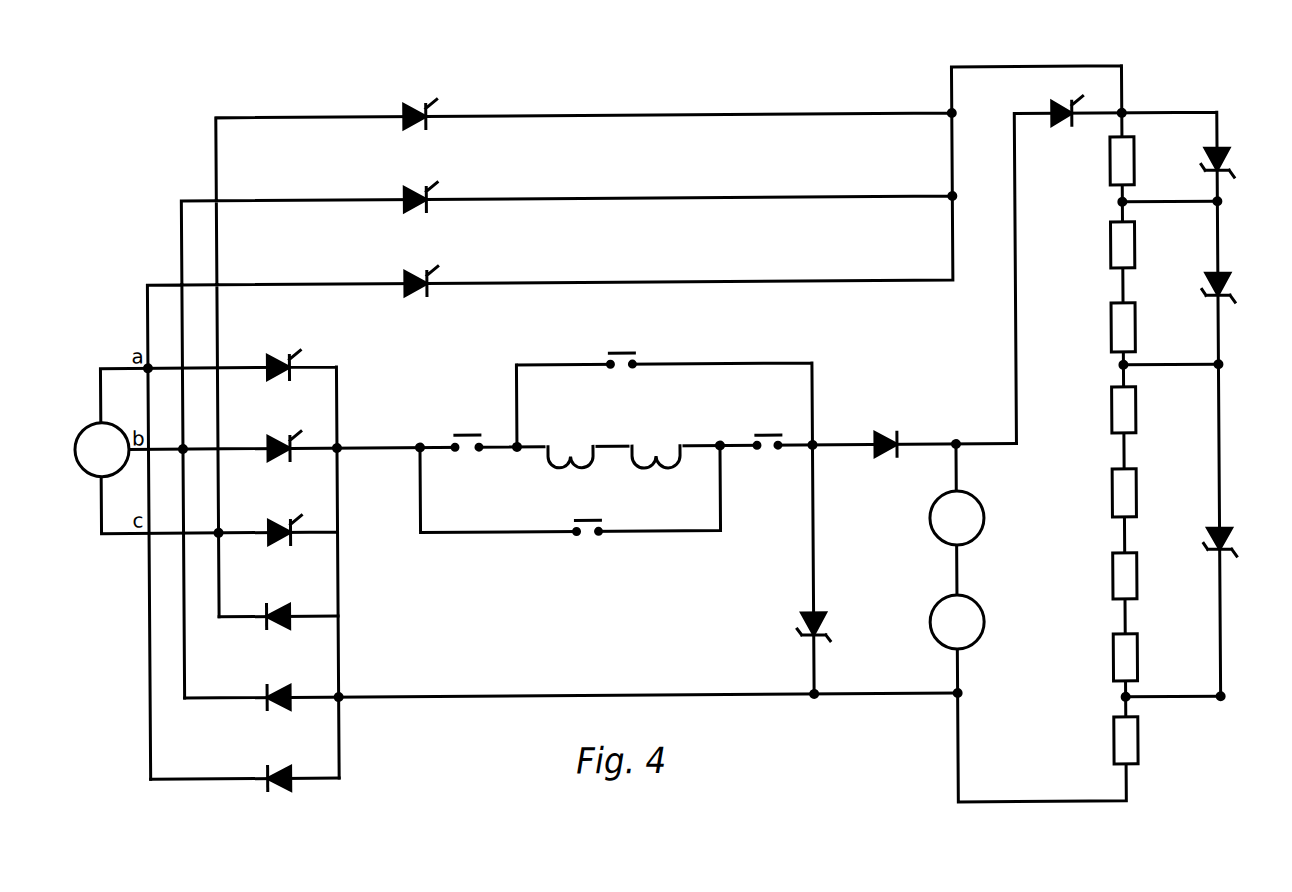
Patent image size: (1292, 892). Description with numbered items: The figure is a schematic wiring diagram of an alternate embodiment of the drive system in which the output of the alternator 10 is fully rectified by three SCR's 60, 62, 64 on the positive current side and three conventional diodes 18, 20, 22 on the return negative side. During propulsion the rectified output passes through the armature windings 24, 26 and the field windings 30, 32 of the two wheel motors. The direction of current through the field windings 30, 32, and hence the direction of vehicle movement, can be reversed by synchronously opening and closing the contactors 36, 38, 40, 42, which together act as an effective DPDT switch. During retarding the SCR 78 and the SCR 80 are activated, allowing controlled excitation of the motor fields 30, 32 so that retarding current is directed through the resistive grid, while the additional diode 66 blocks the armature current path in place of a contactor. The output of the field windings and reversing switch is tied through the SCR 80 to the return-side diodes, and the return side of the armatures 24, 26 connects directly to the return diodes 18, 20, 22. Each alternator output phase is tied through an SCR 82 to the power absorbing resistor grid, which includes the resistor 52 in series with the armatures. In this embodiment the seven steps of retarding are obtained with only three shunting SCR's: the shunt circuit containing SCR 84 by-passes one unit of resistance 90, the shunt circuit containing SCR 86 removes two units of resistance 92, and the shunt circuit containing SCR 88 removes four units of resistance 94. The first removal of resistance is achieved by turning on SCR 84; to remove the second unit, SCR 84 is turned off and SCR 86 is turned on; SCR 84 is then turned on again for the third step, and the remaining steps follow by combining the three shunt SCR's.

The alternator 10 is at (120, 421).
The diode 18 is at (274, 603).
The diode 20 is at (275, 685).
The diode 22 is at (276, 767).
The armature winding 24 is at (980, 511).
The armature winding 26 is at (980, 614).
The field winding 30 is at (646, 455).
The field winding 32 is at (566, 455).
The contactor 36 is at (766, 434).
The contactor 38 is at (466, 432).
The contactor 40 is at (588, 517).
The contactor 42 is at (626, 350).
The power absorbing resistor 52 is at (1138, 739).
The SCR 60 is at (274, 352).
The SCR 62 is at (273, 440).
The SCR 64 is at (273, 517).
The diode 66 is at (882, 431).
The SCR 78 is at (1059, 104).
The SCR 80 is at (822, 612).
The SCR 82 is at (410, 105).
The SCR 84 is at (1230, 156).
The SCR 86 is at (1230, 280).
The SCR 88 is at (1230, 532).
The unit of resistance 90 is at (1138, 158).
The units of resistance 92 is at (1138, 245).
The units of resistance 94 is at (1138, 405).